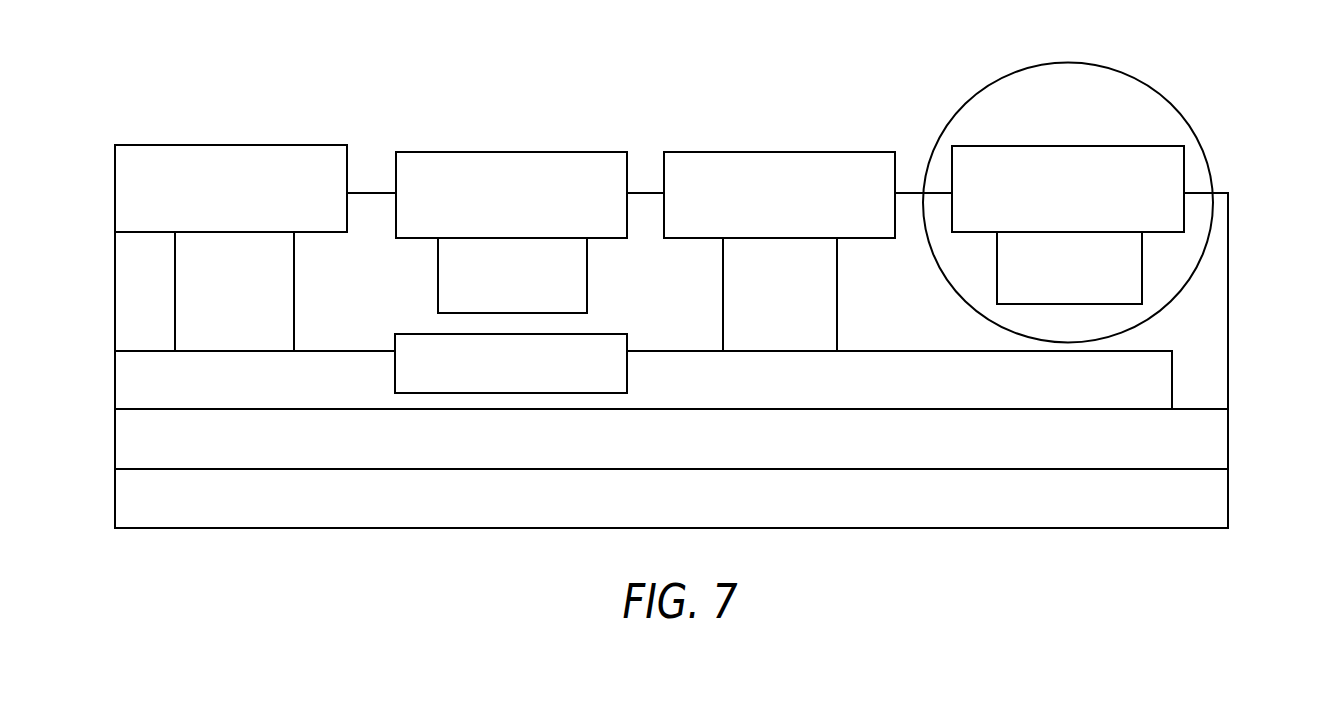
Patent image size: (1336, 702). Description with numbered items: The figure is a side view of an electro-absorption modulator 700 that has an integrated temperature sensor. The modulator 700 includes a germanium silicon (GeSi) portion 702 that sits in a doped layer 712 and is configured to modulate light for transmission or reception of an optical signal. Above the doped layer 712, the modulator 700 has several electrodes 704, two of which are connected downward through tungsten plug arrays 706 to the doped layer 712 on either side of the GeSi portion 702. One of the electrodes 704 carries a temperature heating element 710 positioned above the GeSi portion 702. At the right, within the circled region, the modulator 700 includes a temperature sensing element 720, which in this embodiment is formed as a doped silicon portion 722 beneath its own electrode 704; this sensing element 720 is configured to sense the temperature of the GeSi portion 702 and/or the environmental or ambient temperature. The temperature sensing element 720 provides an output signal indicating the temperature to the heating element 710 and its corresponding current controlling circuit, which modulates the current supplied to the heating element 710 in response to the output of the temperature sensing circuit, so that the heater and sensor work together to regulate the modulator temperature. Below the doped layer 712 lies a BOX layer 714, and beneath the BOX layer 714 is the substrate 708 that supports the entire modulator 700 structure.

The electro-absorption modulator 700 is at (1262, 108).
The germanium silicon (GeSi) portion 702 is at (407, 334).
The electrodes 704 is at (131, 145).
The tungsten plug arrays 706 is at (294, 331).
The substrate 708 is at (1228, 499).
The temperature heating element 710 is at (588, 262).
The doped layer 712 is at (115, 363).
The BOX layer 714 is at (1228, 210).
The temperature sensing element 720 is at (997, 76).
The doped silicon portion 722 is at (1142, 300).